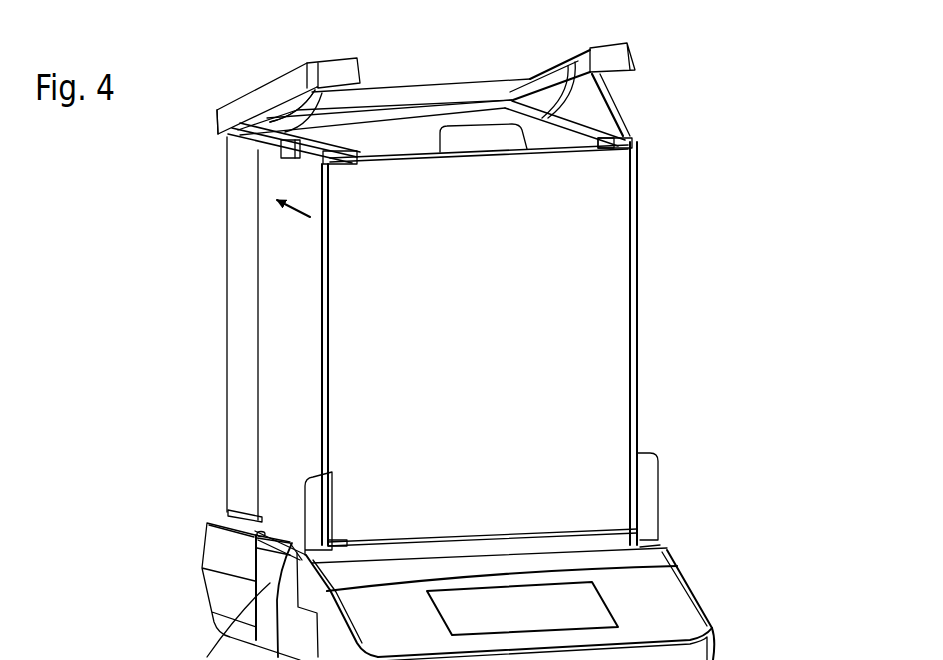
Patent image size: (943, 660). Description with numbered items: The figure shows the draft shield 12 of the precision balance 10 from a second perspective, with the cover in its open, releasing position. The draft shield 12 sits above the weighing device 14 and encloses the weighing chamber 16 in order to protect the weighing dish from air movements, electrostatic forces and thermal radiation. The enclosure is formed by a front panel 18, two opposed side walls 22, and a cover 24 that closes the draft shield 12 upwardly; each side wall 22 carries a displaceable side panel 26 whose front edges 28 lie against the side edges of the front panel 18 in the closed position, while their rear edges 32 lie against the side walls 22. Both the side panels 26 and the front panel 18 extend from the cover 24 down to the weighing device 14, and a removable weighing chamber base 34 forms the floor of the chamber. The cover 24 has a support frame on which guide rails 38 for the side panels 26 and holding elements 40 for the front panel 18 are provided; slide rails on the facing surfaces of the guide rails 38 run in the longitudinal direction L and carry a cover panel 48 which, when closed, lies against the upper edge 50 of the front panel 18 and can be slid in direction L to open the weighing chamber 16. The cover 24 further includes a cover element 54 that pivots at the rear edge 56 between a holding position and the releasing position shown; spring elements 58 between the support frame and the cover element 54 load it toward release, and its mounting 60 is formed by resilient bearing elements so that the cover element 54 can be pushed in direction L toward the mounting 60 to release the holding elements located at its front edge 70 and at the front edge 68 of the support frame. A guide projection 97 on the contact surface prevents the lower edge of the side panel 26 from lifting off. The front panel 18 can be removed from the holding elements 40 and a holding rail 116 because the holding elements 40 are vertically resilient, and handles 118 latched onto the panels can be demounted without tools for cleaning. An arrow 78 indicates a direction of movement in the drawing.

The precision balance 10 is at (753, 102).
The draft shield 12 is at (710, 247).
The weighing device 14 is at (684, 605).
The weighing chamber 16 is at (290, 388).
The front panel 18 is at (343, 413).
The side panels 22 is at (247, 282).
The cover 24 is at (275, 95).
The side panel 26 is at (277, 300).
The front edges 28 is at (323, 340).
The rear edges 32 is at (257, 253).
The weighing chamber base 34 is at (268, 562).
The guide rails 38 is at (262, 143).
The holding elements 40 is at (340, 165).
The cover panel 48 is at (538, 133).
The upper edge 50 is at (410, 160).
The cover element 54 is at (338, 75).
The rear edge 56 is at (215, 118).
The spring elements 58 is at (327, 120).
The mounting 60 is at (212, 102).
The front edge 68 is at (603, 143).
The front edge 70 is at (607, 62).
The direction of opening 78 is at (297, 170).
The guide projection 97 is at (263, 532).
The holding rail 116 is at (468, 550).
The handles 118 is at (462, 143).
The longitudinal direction L is at (293, 222).